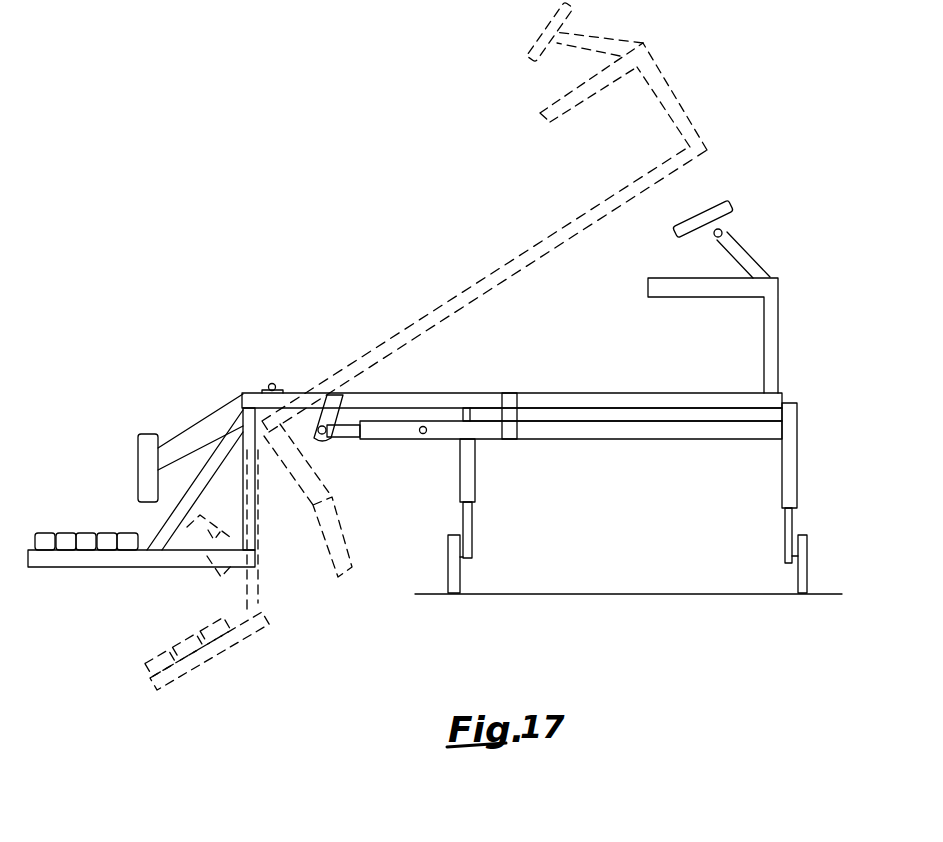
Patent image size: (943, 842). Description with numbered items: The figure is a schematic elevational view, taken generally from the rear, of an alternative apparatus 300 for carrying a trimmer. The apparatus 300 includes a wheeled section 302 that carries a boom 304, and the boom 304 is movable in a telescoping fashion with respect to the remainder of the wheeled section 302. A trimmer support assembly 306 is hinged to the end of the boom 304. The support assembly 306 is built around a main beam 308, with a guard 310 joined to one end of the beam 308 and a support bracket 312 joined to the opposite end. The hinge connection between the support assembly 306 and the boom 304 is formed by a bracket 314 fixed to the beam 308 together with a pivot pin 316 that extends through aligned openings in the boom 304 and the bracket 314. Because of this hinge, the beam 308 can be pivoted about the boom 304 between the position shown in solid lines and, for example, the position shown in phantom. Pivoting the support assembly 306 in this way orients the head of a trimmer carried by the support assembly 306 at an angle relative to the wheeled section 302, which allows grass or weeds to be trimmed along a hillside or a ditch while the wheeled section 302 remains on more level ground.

The apparatus 300 is at (455, 290).
The wheeled section 302 is at (580, 440).
The boom 304 is at (346, 439).
The trimmer support assembly 306 is at (779, 351).
The main beam 308 is at (440, 320).
The guard 310 is at (137, 568).
The support bracket 312 is at (257, 528).
The bracket 314 is at (313, 391).
The pivot pin 316 is at (317, 442).